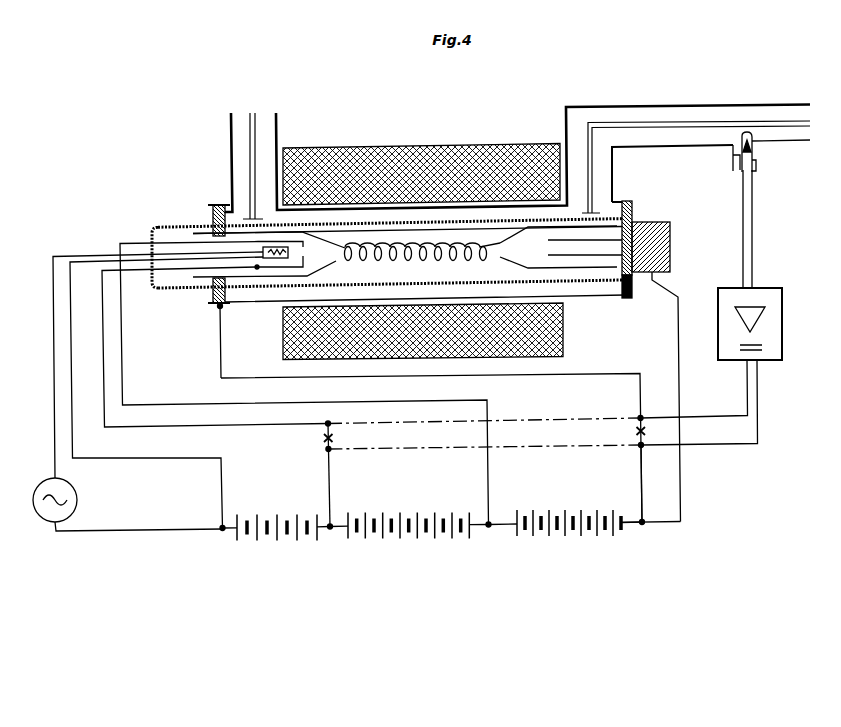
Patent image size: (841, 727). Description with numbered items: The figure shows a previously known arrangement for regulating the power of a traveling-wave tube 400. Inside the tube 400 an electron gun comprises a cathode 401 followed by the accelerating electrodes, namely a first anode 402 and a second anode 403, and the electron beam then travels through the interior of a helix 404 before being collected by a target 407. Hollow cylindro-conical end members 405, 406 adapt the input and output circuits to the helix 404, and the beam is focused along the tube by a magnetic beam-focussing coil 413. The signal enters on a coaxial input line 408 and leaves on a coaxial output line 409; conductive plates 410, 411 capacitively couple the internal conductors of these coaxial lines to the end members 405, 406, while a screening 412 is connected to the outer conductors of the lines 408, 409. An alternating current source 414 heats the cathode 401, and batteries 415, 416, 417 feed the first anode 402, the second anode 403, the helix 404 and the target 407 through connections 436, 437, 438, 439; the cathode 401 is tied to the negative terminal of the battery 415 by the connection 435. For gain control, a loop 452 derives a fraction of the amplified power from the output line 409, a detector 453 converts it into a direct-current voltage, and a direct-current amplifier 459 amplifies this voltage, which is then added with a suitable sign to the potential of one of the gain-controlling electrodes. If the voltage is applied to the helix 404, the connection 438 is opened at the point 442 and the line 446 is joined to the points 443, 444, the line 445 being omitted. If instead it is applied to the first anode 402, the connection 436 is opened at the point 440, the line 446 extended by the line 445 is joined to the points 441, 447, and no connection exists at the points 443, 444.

The traveling-wave tube 400 is at (396, 226).
The cathode 401 is at (262, 252).
The first anode 402 is at (302, 245).
The second anode 403 is at (318, 268).
The helix 404 is at (445, 260).
The cylindro-conical end member 405 is at (312, 237).
The cylindro-conical end member 406 is at (512, 238).
The target 407 is at (652, 222).
The coaxial input line 408 is at (274, 147).
The coaxial output line 409 is at (568, 135).
The conductive plate 410 is at (233, 210).
The conductive plate 411 is at (610, 200).
The screening 412 is at (258, 305).
The magnetic beam-focussing coil 413 is at (408, 150).
The alternating current source 414 is at (78, 501).
The battery 415 is at (285, 515).
The battery 416 is at (410, 516).
The battery 417 is at (566, 512).
The connection 435 is at (190, 461).
The connection 436 is at (332, 499).
The connection 437 is at (489, 482).
The connection 438 is at (641, 486).
The connection 439 is at (681, 492).
The point 440 is at (313, 475).
The point 441 is at (335, 421).
The point 442 is at (656, 436).
The point 443 is at (644, 412).
The point 444 is at (644, 450).
The line 445 is at (578, 444).
The line 446 is at (757, 413).
The point 447 is at (335, 452).
The loop 452 is at (762, 133).
The detector 453 is at (733, 162).
The direct-current amplifier 459 is at (775, 320).